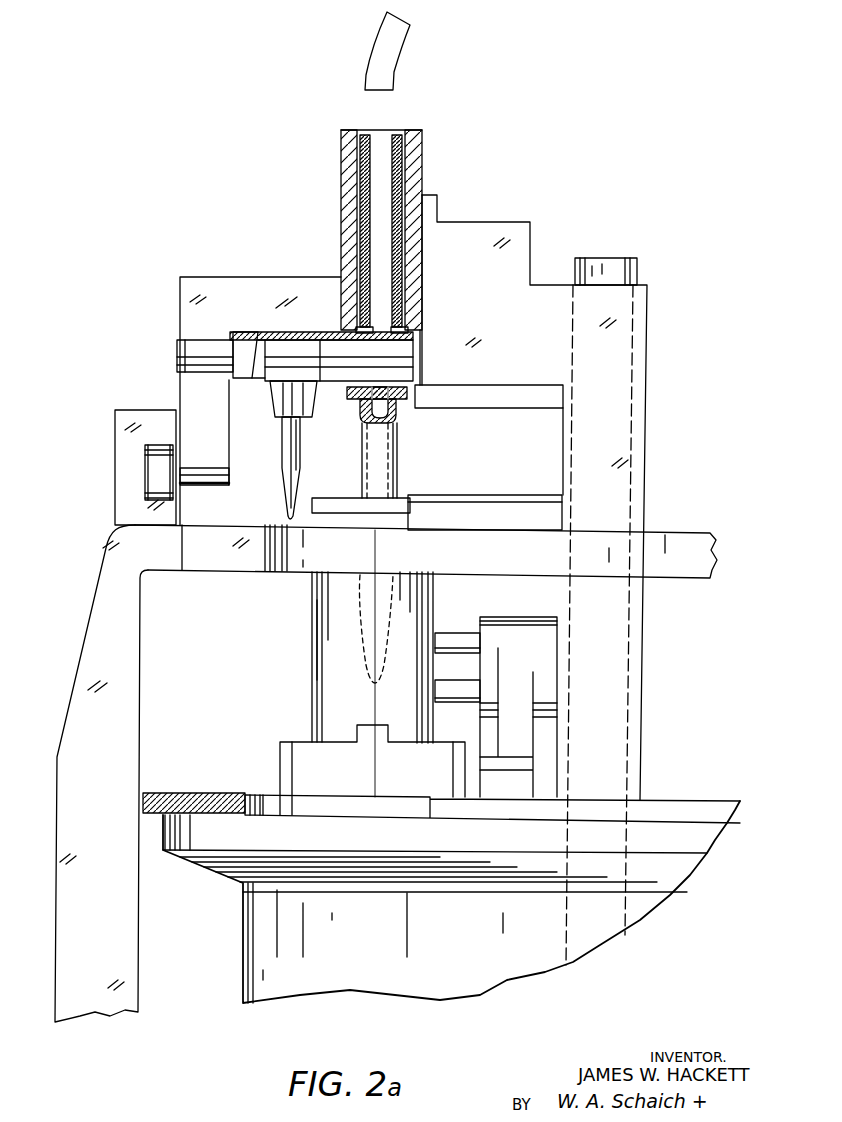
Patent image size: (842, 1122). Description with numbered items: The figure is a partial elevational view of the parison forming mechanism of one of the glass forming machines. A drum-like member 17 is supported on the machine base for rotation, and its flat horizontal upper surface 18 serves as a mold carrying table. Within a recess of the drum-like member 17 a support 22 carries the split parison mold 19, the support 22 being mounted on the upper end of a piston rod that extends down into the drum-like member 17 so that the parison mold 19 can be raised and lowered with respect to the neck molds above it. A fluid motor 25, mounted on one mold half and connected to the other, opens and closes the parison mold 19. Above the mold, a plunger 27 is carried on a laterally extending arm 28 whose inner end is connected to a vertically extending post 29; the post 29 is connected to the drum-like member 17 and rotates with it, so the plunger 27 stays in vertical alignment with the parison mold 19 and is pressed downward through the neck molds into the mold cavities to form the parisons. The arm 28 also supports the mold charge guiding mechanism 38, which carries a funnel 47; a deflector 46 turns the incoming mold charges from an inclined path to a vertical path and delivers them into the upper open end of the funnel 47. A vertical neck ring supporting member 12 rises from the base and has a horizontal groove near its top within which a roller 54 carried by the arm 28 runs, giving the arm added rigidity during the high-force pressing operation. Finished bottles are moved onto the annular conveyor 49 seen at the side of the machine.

The neck ring supporting member 12 is at (108, 786).
The drum-like member 17 is at (265, 958).
The upper surface 18 is at (270, 798).
The split parison mold 19 is at (322, 666).
The support 22 is at (305, 757).
The fluid motor 25 is at (503, 628).
The plunger 27 is at (287, 453).
The laterally extending arm 28 is at (525, 240).
The vertically extending post 29 is at (610, 273).
The mold charge guiding mechanism 38 is at (348, 212).
The deflector 46 is at (386, 72).
The funnel 47 is at (385, 132).
The annular conveyor 49 is at (192, 793).
The roller 54 is at (155, 468).